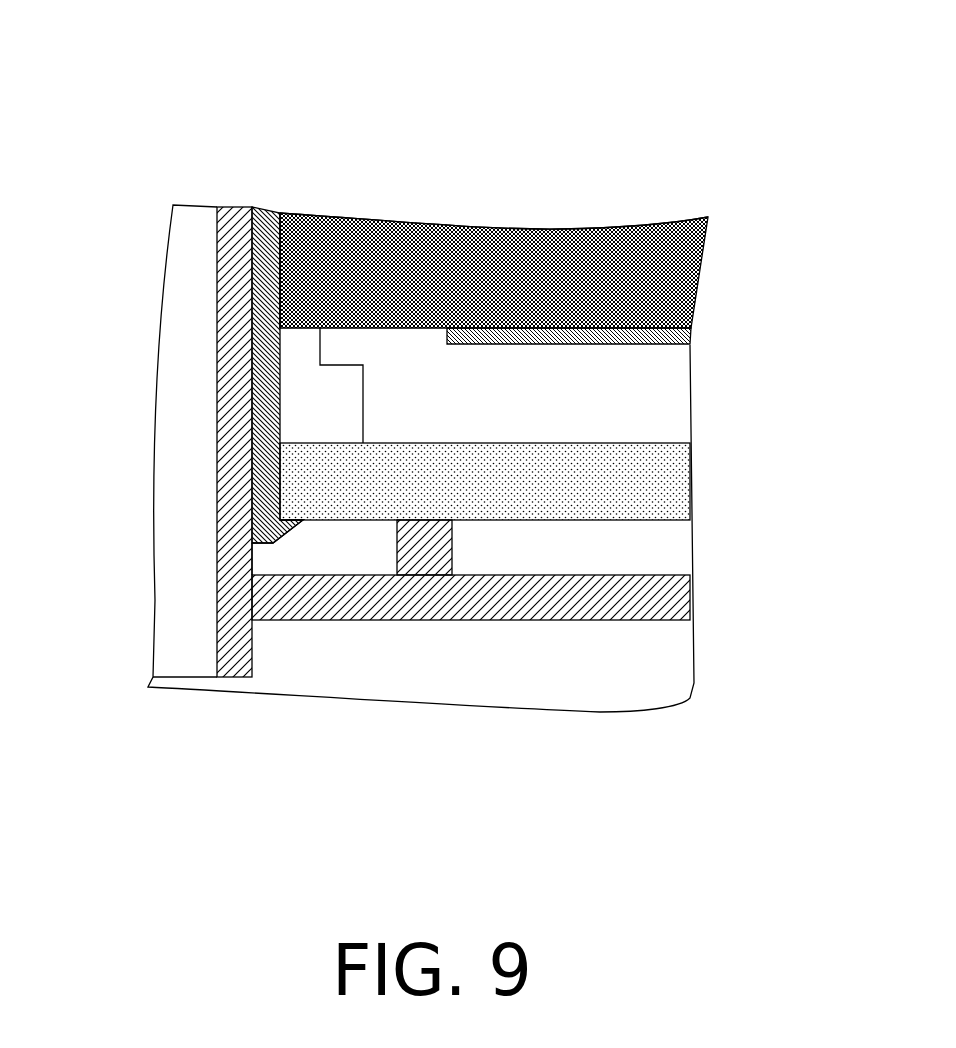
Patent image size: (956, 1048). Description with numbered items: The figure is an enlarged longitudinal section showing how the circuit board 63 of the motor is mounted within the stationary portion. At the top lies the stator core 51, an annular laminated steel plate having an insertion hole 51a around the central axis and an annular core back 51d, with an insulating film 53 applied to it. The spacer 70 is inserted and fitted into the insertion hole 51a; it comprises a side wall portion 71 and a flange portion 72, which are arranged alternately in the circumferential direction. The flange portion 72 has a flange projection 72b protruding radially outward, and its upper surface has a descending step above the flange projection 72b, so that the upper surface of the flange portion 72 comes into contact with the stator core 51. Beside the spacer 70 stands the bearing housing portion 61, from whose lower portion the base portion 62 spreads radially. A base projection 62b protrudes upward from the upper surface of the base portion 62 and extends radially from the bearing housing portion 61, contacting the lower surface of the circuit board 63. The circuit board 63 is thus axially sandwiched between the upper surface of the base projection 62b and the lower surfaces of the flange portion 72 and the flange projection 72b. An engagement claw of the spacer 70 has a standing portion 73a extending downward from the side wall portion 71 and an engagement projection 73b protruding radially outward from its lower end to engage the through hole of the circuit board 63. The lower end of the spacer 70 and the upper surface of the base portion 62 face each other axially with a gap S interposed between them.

The stator core 51 is at (422, 267).
The insertion hole 51a is at (297, 252).
The core back 51d is at (383, 217).
The insulating film 53 is at (603, 330).
The bearing housing portion 61 is at (232, 250).
The base portion 62 is at (547, 613).
The base projection 62b is at (425, 547).
The circuit board 63 is at (620, 468).
The spacer 70 is at (222, 407).
The side wall portion 71 is at (262, 240).
The flange portion 72 is at (300, 353).
The flange projection 72b is at (345, 400).
The standing portion 73a is at (258, 483).
The engagement projection 73b is at (270, 545).
The gap S is at (273, 557).